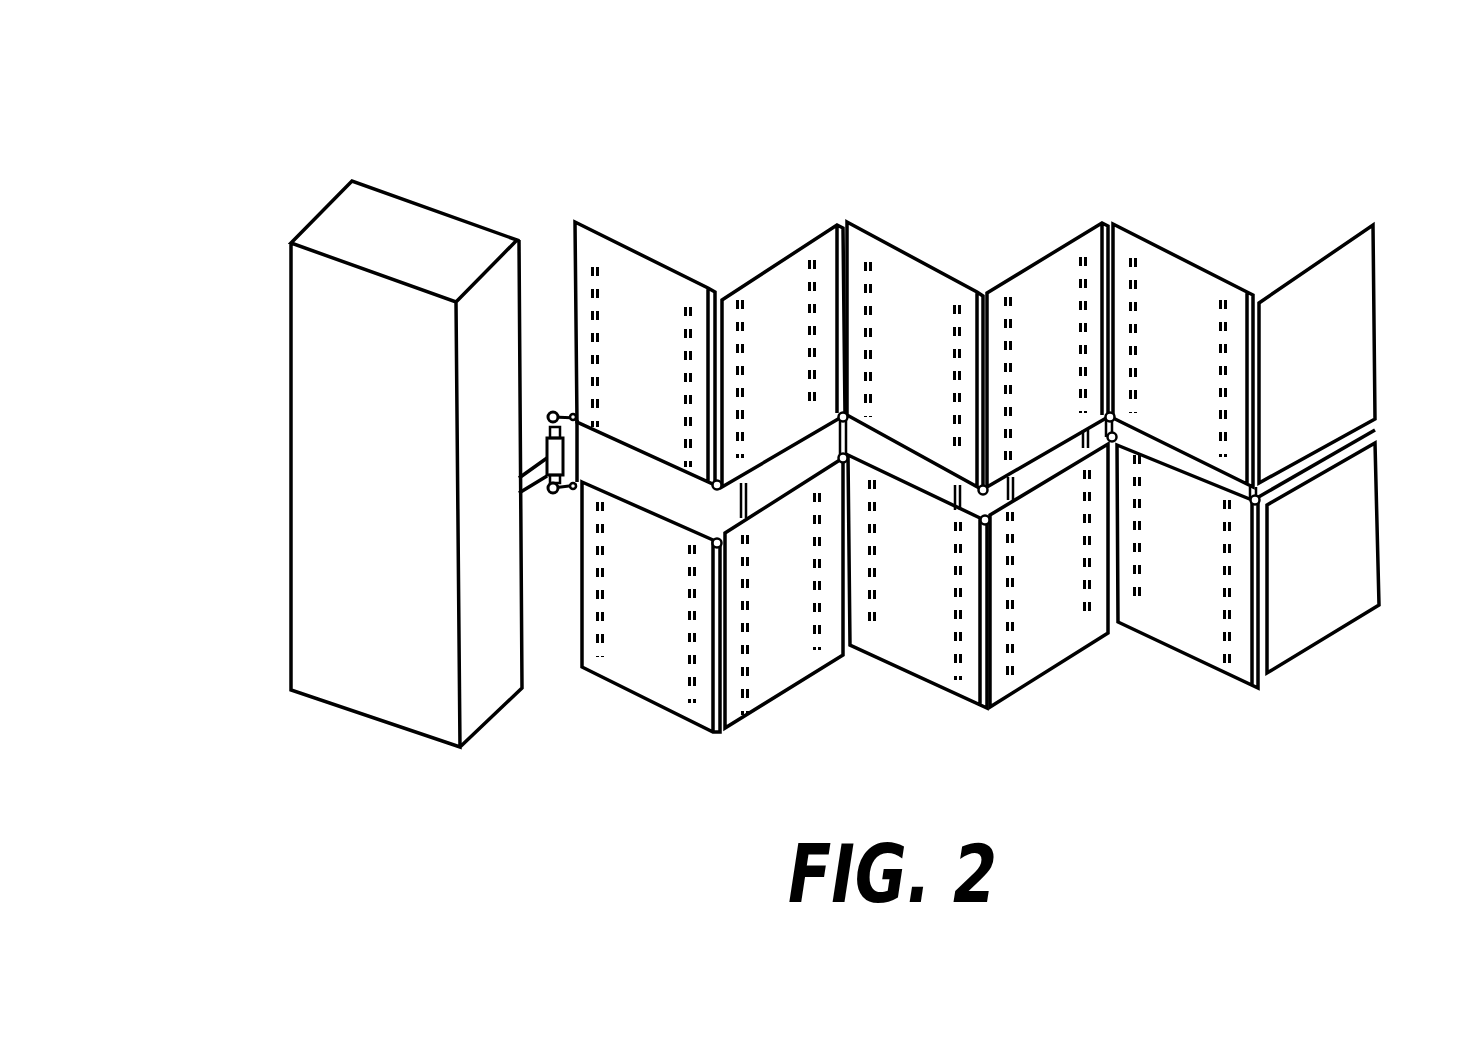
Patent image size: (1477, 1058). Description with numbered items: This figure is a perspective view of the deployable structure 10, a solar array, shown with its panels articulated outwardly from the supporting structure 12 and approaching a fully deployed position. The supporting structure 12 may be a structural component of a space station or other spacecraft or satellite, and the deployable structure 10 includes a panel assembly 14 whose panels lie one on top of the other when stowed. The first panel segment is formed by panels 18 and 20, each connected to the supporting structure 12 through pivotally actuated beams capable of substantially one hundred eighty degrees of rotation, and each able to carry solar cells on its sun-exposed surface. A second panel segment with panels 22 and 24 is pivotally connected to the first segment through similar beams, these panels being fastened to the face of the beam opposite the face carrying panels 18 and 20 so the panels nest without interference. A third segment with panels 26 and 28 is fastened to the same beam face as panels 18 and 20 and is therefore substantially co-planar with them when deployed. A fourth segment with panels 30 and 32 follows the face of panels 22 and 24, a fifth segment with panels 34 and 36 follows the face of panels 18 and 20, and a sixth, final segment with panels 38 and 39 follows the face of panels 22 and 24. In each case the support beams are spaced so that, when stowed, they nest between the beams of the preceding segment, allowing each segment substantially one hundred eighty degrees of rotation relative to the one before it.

The deployable structure 10 is at (995, 405).
The supporting structure 12 is at (288, 326).
The panel assembly 14 is at (815, 228).
The panel 18 is at (618, 687).
The panel 20 is at (628, 243).
The panel 22 is at (740, 718).
The panel 24 is at (767, 263).
The panel 26 is at (928, 687).
The panel 28 is at (892, 247).
The panel 30 is at (1010, 698).
The panel 32 is at (1040, 270).
The panel 34 is at (1193, 663).
The panel 36 is at (1205, 258).
The panel 38 is at (1381, 353).
The panel 39 is at (1327, 640).